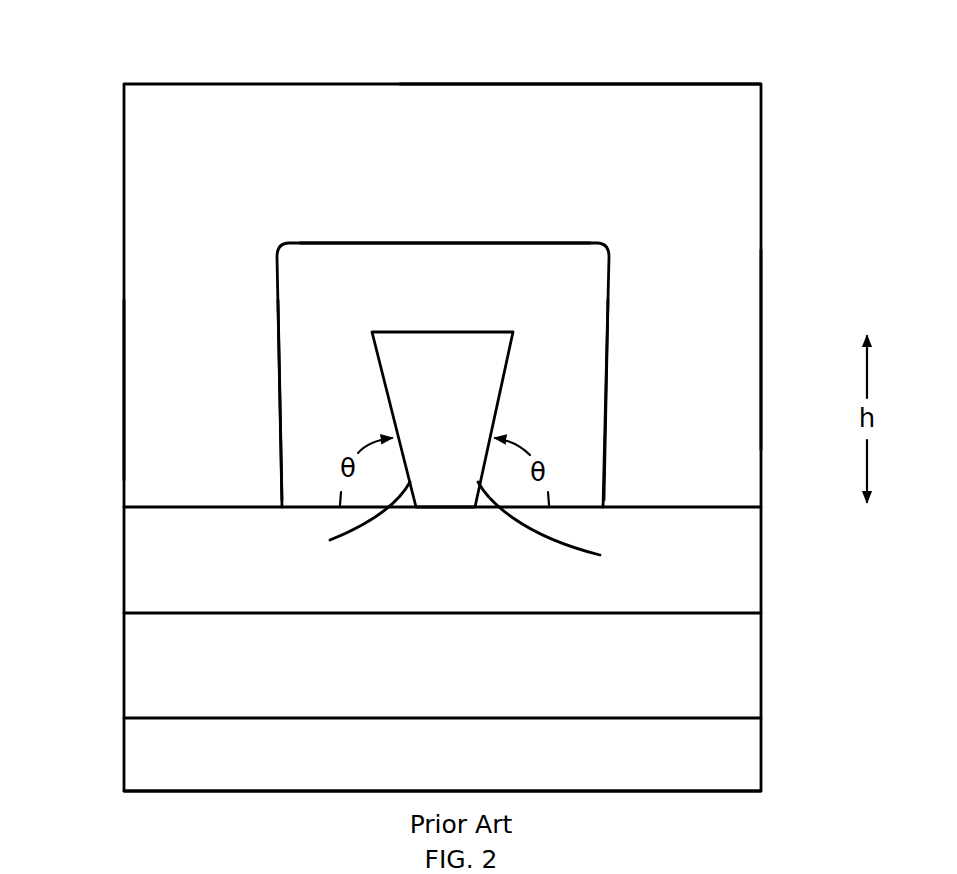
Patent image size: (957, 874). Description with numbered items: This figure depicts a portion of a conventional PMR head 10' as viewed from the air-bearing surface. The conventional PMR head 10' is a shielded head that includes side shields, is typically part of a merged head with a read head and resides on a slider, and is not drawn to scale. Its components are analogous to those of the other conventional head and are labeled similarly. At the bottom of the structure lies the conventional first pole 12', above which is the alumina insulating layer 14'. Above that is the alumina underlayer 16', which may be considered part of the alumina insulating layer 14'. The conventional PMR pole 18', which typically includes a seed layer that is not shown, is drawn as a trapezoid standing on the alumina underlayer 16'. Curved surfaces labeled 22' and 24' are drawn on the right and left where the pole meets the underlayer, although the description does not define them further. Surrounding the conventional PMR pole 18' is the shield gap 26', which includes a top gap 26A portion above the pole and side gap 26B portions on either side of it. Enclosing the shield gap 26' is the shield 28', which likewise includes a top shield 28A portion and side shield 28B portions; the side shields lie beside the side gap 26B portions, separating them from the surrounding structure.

The conventional PMR head 10' is at (462, 14).
The conventional first pole 12' is at (470, 738).
The alumina insulating layer 14' is at (415, 674).
The alumina underlayer 16' is at (470, 543).
The conventional PMR pole 18' is at (283, 402).
The right sloped underlayer surface 22' is at (655, 537).
The left sloped underlayer surface 24' is at (231, 537).
The shield gap 26' is at (339, 357).
The top gap 26A is at (302, 228).
The side gap 26B is at (272, 424).
The shield 28' is at (399, 412).
The top shield 28A is at (584, 74).
The side shield 28B is at (118, 397).